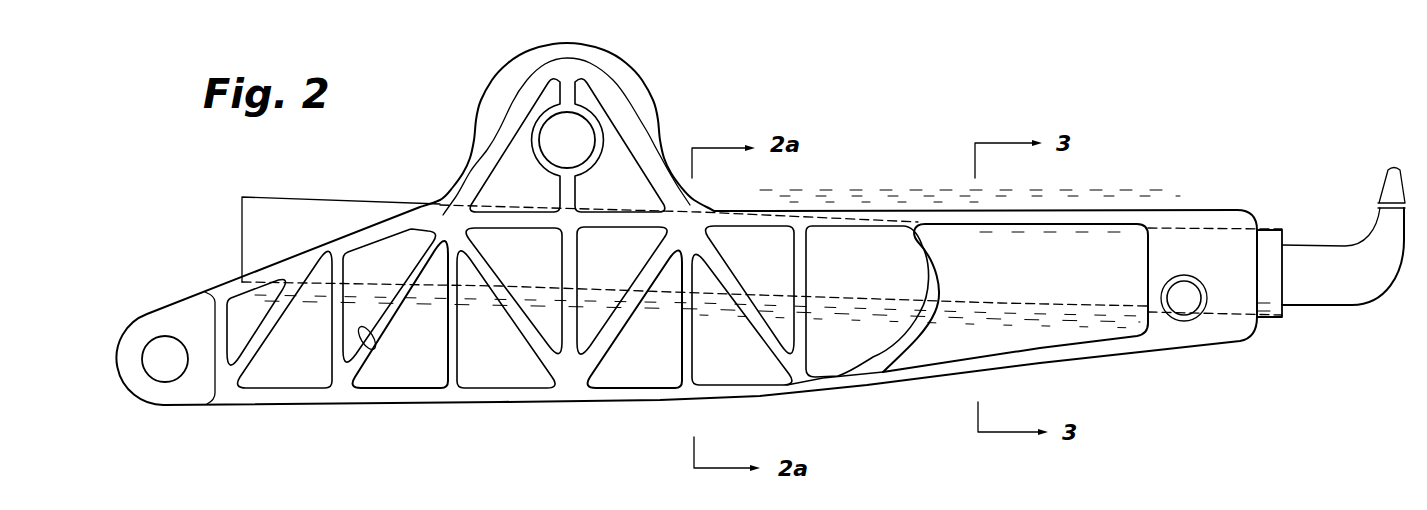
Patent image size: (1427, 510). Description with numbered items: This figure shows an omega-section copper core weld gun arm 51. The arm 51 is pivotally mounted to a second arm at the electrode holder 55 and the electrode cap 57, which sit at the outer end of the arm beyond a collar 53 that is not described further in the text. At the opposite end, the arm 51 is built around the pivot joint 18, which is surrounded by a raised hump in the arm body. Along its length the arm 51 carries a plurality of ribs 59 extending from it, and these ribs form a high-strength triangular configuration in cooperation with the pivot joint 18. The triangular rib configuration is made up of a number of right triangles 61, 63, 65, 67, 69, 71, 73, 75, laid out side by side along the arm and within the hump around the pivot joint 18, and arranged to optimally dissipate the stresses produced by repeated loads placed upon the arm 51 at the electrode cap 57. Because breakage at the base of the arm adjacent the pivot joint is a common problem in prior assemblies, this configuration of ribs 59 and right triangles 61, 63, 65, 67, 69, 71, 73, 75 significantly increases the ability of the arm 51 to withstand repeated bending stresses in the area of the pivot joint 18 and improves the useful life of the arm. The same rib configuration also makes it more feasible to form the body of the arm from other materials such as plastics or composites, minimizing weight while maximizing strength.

The pivot joint 18 is at (580, 133).
The copper core weld gun arm 51 is at (1096, 222).
The collar 53 is at (1275, 318).
The electrode holder 55 is at (1360, 307).
The electrode cap 57 is at (1380, 188).
The ribs 59 is at (362, 347).
The right triangle 61 is at (410, 363).
The right triangle 63 is at (478, 362).
The right triangle 65 is at (548, 333).
The right triangle 67 is at (593, 340).
The right triangle 69 is at (640, 363).
The right triangle 71 is at (722, 352).
The right triangle 73 is at (510, 178).
The right triangle 75 is at (628, 170).